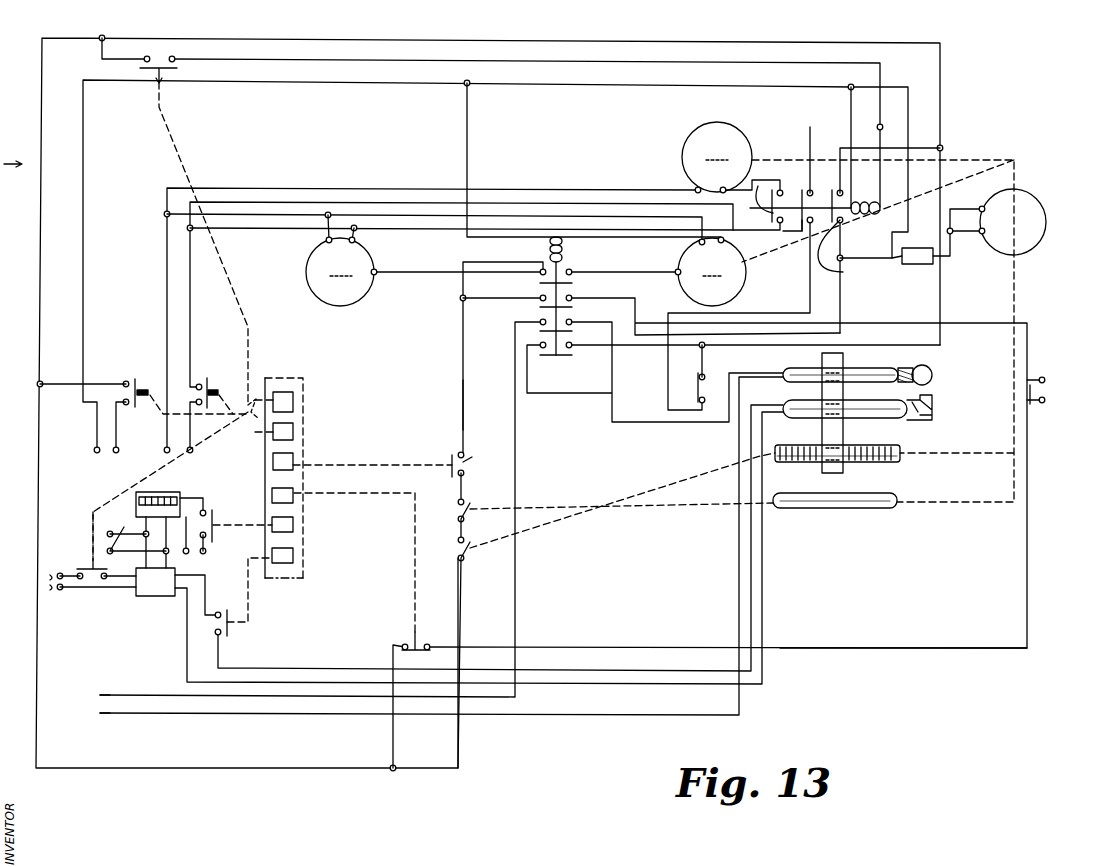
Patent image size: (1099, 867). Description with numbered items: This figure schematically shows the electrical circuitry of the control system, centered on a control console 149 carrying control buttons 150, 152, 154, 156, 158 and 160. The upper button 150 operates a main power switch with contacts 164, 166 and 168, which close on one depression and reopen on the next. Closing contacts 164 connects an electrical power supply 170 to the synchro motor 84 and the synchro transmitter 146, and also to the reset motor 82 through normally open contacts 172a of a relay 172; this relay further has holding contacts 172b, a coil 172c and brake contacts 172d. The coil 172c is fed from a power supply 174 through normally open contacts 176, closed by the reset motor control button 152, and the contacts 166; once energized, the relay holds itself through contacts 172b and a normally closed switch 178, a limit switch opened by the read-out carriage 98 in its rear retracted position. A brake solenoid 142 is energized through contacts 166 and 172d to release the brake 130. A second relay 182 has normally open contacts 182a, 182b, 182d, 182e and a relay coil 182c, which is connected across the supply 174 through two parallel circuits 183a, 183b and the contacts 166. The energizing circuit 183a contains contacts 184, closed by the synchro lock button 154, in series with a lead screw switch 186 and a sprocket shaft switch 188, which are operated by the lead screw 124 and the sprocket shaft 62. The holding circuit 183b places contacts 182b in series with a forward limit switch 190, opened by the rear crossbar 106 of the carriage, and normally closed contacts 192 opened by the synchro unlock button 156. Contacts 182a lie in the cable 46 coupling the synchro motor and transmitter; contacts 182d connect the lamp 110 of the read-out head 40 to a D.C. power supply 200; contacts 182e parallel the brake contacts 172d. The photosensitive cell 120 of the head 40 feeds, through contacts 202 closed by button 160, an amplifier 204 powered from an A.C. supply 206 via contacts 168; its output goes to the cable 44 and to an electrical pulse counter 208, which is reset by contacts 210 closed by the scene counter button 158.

The normally open contacts 176 is at (157, 64).
The synchro motor 84 is at (748, 142).
The relay 172 is at (824, 163).
The normally open contacts 172a is at (771, 188).
The holding contacts 172b is at (800, 233).
The coil 172c is at (866, 222).
The brake contacts 172d is at (860, 251).
The brake solenoid 142 is at (916, 265).
The brake 130 is at (1042, 192).
The synchro transmitter 146 is at (376, 262).
The cable 46 is at (428, 280).
The relay 182 is at (584, 264).
The normally open contacts 182a is at (538, 279).
The normally open contacts 182b is at (538, 304).
The relay coil 182c is at (546, 244).
The normally open contacts 182d is at (538, 325).
The normally open contacts 182e is at (538, 350).
The reset motor 82 is at (745, 283).
The main power switch contacts 166 is at (126, 380).
The main power switch contacts 164 is at (190, 386).
The power supply 174 is at (107, 452).
The electrical power supply 170 is at (175, 452).
The control console 149 is at (286, 376).
The control button 150 is at (293, 396).
The reset motor control button 152 is at (293, 428).
The synchro lock button 154 is at (293, 458).
The synchro unlock button 156 is at (293, 490).
The scene counter button 158 is at (293, 521).
The control button 160 is at (293, 552).
The electrical pulse counter 208 is at (180, 493).
The cable 44 is at (127, 530).
The normally open contacts 210 is at (213, 516).
The main power switch contacts 168 is at (86, 566).
The A.C. supply 206 is at (50, 598).
The amplifier 204 is at (158, 590).
The normally open contacts 202 is at (224, 640).
The energizing circuit 183a is at (454, 406).
The normally open contacts 184 is at (470, 461).
The lead screw switch 186 is at (458, 506).
The sprocket shaft switch 188 is at (458, 545).
The normally closed contacts 192 is at (418, 641).
The normally closed switch 178 is at (695, 388).
The read-out carriage 98 is at (809, 361).
The lamp 110 is at (926, 370).
The read-out head 40 is at (951, 389).
The photosensitive cell 120 is at (933, 399).
The rear crossbar 106 is at (828, 465).
The lead screw 124 is at (882, 458).
The sprocket shaft 62 is at (817, 506).
The forward limit switch 190 is at (1046, 392).
The holding circuit 183b is at (846, 648).
The D.C. power supply 200 is at (82, 701).